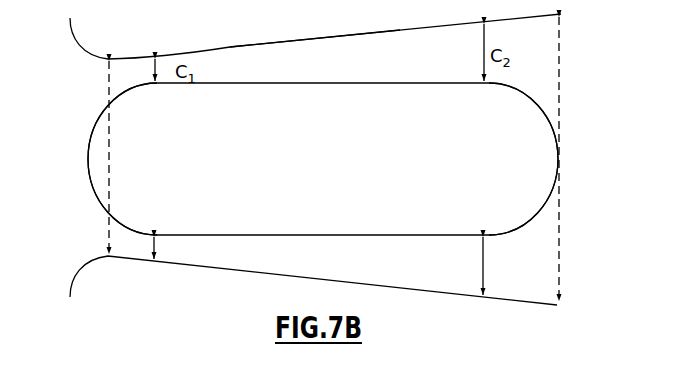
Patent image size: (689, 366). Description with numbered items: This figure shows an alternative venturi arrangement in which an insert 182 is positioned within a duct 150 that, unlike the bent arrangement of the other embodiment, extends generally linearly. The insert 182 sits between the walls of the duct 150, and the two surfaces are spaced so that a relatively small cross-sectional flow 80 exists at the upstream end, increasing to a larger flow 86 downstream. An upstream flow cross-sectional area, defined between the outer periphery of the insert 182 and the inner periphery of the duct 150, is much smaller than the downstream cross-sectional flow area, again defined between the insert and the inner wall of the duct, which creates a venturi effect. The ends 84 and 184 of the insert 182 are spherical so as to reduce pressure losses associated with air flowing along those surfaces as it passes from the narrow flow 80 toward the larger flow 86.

The relatively small cross-sectional flow 80 is at (128, 78).
The alternative duct embodiment 150 is at (250, 46).
The larger flow 86 is at (432, 257).
The insert 182 is at (342, 168).
The end of the insert 84 is at (88, 161).
The end of the insert 184 is at (559, 152).